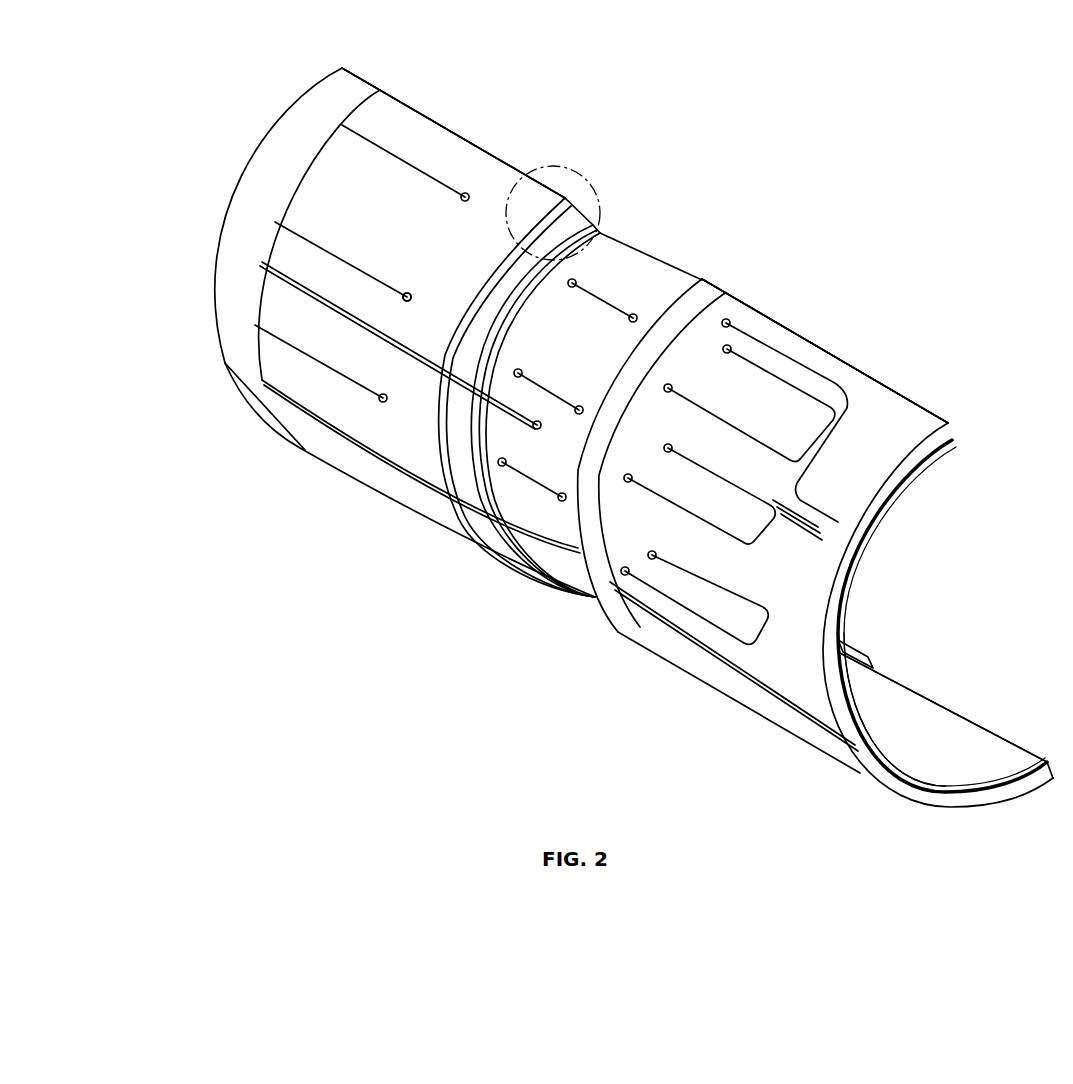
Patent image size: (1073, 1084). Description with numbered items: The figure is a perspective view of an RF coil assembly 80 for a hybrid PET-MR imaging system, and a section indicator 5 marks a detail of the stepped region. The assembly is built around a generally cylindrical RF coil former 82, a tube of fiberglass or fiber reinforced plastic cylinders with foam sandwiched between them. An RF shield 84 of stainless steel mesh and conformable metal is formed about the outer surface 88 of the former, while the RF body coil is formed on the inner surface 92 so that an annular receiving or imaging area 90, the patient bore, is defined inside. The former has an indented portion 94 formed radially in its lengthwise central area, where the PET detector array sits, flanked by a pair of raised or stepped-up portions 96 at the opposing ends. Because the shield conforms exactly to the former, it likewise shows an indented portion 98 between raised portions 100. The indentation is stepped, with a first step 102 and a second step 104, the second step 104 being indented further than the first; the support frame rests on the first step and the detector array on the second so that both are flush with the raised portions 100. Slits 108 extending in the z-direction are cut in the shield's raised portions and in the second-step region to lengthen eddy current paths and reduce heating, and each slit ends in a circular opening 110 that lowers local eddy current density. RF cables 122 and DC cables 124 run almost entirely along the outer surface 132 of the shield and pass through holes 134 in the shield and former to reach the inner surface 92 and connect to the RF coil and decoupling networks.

The RF coil assembly 80 is at (891, 301).
The RF coil former 82 is at (991, 711).
The RF shield 84 is at (481, 132).
The outer surface 88 is at (949, 439).
The annular receiving or imaging area 90 is at (888, 595).
The inner surface 92 is at (908, 692).
The indented portion 94 is at (707, 250).
The raised or stepped-up portions 96 is at (553, 176).
The indented portion 98 is at (825, 351).
The raised portions 100 is at (825, 351).
The first step 102 is at (571, 214).
The second step 104 is at (628, 264).
The slits 108 is at (377, 277).
The bubble or circular opening 110 is at (407, 304).
The RF cables 122 is at (300, 307).
The DC cables 124 is at (778, 350).
The outer surface 132 is at (418, 118).
The holes 134 is at (540, 432).
The section line for FIG. 5 is at (530, 150).